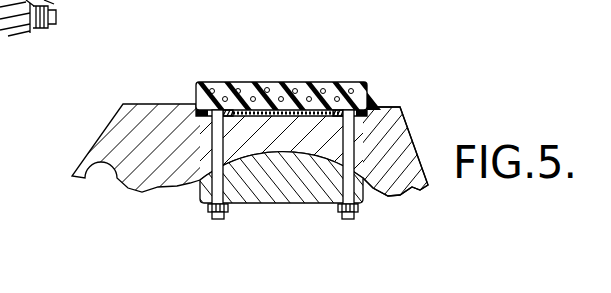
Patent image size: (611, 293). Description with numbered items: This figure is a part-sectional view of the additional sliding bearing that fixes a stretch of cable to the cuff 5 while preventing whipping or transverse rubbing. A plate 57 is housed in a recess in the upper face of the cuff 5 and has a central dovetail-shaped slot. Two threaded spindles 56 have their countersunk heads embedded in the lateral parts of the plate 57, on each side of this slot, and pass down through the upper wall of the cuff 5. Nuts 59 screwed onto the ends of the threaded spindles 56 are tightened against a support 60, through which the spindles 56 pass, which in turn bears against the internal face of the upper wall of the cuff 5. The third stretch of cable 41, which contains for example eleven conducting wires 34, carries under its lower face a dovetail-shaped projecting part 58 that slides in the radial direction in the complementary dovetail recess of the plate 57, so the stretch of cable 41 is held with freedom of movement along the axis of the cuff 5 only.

The cuff 5 is at (395, 143).
The conducting wires 34 is at (327, 84).
The stretch of cable 41 is at (293, 32).
The threaded spindles 56 is at (363, 115).
The plate 57 is at (197, 107).
The dovetail-shaped projecting part 58 is at (264, 21).
The nuts 59 is at (338, 207).
The support 60 is at (248, 182).